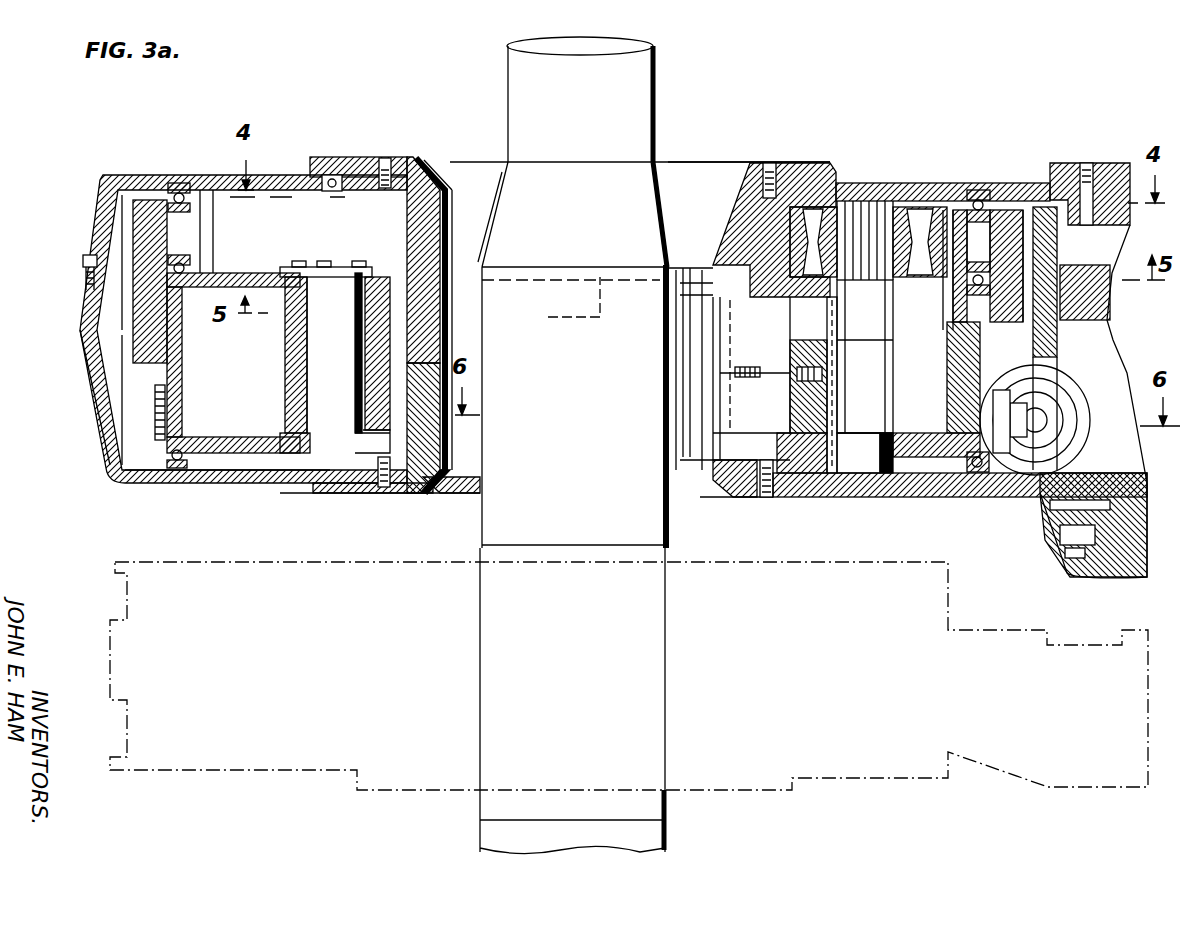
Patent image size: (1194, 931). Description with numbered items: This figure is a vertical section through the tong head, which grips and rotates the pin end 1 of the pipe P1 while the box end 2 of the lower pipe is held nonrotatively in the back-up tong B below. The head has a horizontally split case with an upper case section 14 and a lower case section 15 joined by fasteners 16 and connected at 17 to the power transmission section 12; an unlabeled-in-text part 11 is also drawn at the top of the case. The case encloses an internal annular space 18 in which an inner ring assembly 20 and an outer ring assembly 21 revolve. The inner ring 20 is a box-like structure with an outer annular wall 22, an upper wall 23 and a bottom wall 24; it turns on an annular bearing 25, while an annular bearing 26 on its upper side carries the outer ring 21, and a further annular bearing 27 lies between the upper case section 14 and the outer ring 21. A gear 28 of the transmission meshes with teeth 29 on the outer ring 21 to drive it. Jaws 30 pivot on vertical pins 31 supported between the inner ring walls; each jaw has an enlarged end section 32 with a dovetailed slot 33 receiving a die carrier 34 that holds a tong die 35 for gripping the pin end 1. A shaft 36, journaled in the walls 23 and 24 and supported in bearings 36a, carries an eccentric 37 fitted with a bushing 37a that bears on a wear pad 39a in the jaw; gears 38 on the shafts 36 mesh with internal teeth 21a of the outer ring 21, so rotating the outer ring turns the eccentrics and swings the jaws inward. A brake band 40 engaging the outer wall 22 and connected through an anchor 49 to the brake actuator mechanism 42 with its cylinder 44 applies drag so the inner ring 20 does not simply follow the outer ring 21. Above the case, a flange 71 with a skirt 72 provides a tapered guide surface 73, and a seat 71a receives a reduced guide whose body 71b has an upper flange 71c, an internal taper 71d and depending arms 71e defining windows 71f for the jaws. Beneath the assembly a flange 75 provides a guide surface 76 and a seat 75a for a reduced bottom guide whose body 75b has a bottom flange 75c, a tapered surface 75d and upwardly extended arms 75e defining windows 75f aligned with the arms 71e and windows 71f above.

The pipe P1 is at (657, 78).
The pin end 1 is at (480, 540).
The box end 2 is at (670, 557).
The cover plate 11 is at (288, 175).
The power transmission section 12 is at (1127, 570).
The upper case section 14 is at (112, 175).
The lower case section 15 is at (108, 430).
The fasteners 16 is at (84, 268).
The connection 17 is at (1112, 163).
The internal annular space 18 is at (125, 390).
The inner ring assembly 20 is at (247, 485).
The outer ring assembly 21 is at (135, 346).
The internal teeth 21a is at (210, 230).
The outer annular wall 22 is at (182, 360).
The upper wall 23 is at (233, 312).
The bottom wall 24 is at (246, 437).
The annular bearing 25 is at (177, 470).
The annular bearing 26 is at (190, 265).
The annular bearing 27 is at (179, 183).
The gear 28 is at (1090, 270).
The teeth 29 is at (125, 318).
The jaws 30 is at (284, 372).
The pivot pins 31 is at (328, 280).
The enlarged end section 32 is at (835, 412).
The dovetailed slot 33 is at (826, 393).
The die carrier 34 is at (735, 413).
The tong die 35 is at (727, 348).
The shaft 36 is at (865, 200).
The bearings 36a is at (915, 500).
The eccentric 37 is at (874, 393).
The bushing 37a is at (940, 377).
The gears 38 is at (837, 180).
The wear pad 39a is at (865, 342).
The brake band 40 is at (158, 422).
The brake actuator mechanism 42 is at (1078, 433).
The cylinder 44 is at (1057, 400).
The anchor 49 is at (1017, 430).
The flange 71 is at (785, 163).
The seat 71a is at (767, 163).
The body 71b is at (740, 200).
The upper flange 71c is at (405, 157).
The internal taper 71d is at (430, 170).
The depending arms 71e is at (428, 311).
The windows 71f is at (696, 273).
The skirt 72 is at (405, 240).
The tapered guide surface 73 is at (400, 210).
The flange 75 is at (336, 490).
The seat 75a is at (388, 490).
The body 75b is at (720, 470).
The bottom flange 75c is at (753, 495).
The tapered surface 75d is at (440, 481).
The upwardly extended arms 75e is at (430, 437).
The windows 75f is at (678, 450).
The guide surface 76 is at (415, 480).
The back-up tong B is at (197, 775).